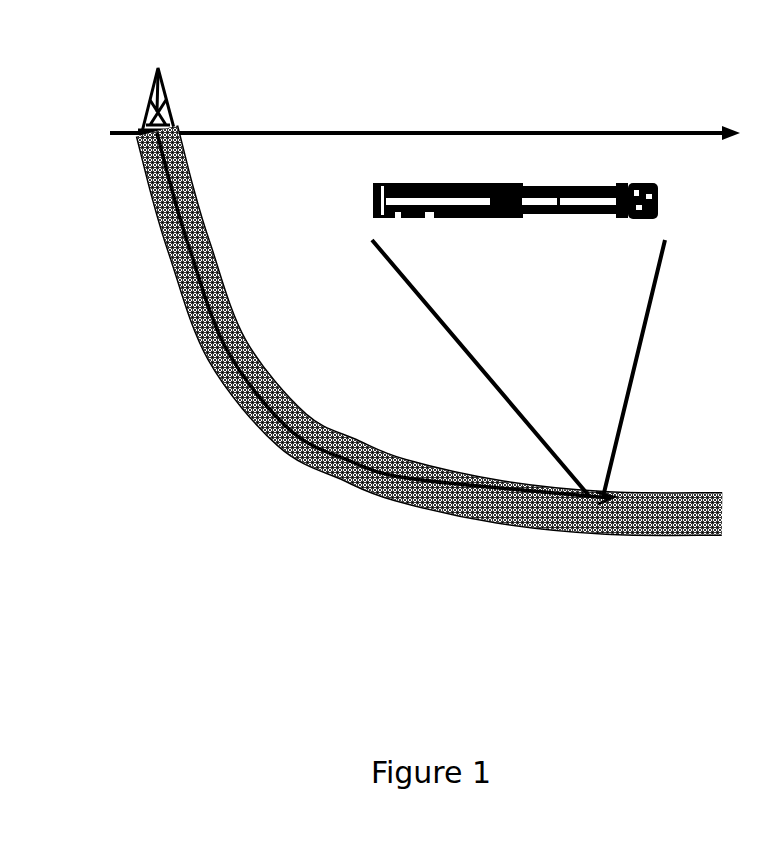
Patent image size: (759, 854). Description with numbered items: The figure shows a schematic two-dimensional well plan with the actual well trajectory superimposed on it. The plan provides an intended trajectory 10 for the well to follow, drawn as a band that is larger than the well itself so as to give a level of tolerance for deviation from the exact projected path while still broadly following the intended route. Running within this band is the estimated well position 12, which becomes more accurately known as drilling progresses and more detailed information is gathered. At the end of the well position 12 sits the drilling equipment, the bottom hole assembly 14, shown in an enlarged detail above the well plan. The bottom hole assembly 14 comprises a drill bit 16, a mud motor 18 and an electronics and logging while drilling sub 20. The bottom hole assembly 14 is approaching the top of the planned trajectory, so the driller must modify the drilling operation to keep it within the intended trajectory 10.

The intended trajectory 10 is at (268, 431).
The well position 12 is at (403, 478).
The bottom hole assembly 14 is at (594, 500).
The drill bit 16 is at (652, 177).
The mud motor 18 is at (560, 177).
The electronics and logging while drilling sub 20 is at (413, 177).